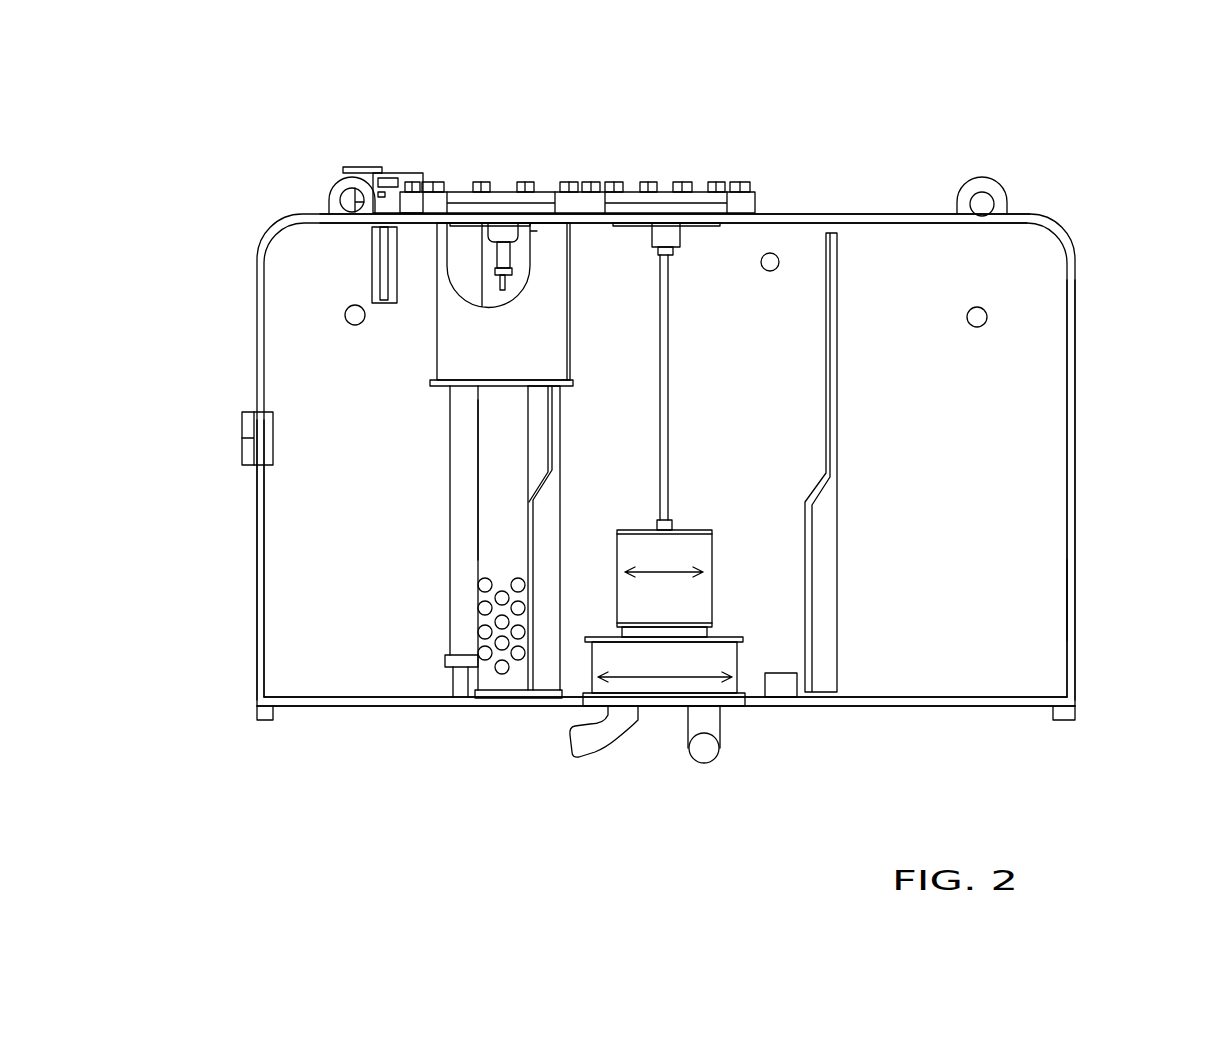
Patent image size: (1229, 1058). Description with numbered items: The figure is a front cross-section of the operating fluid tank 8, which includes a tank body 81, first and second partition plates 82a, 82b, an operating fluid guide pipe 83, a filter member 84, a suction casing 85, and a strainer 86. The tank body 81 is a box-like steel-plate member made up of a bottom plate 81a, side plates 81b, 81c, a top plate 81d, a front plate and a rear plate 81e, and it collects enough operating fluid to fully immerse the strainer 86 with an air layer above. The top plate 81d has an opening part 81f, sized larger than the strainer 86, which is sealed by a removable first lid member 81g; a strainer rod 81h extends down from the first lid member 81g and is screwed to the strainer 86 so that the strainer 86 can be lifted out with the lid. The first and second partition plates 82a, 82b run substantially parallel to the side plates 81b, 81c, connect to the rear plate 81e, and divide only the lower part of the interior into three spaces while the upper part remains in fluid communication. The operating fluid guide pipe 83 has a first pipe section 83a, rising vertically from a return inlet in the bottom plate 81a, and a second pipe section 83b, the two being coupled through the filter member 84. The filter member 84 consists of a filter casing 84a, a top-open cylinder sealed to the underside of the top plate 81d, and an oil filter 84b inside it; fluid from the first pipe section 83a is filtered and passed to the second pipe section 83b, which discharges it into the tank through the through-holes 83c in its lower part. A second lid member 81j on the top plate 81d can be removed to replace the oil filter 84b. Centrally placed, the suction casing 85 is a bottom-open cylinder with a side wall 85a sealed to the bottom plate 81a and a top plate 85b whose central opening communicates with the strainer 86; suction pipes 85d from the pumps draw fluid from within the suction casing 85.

The operating fluid tank 8 is at (1133, 247).
The tank body 81 is at (1088, 334).
The bottom plate 81a is at (903, 695).
The side plate 81b is at (258, 565).
The side plate 81c is at (1078, 497).
The top plate 81d is at (905, 212).
The rear plate 81e is at (1040, 600).
The opening part 81f is at (718, 228).
The first lid member 81g is at (700, 185).
The strainer rod 81h is at (658, 322).
The second lid member 81j is at (460, 185).
The first partition plate 82a is at (566, 530).
The second partition plate 82b is at (840, 532).
The operating fluid guide pipe 83 is at (459, 500).
The first pipe section 83a is at (458, 680).
The second pipe section 83b is at (485, 432).
The through-holes 83c is at (487, 610).
The filter member 84 is at (421, 313).
The filter casing 84a is at (433, 275).
The oil filter 84b is at (467, 248).
The suction casing 85 is at (578, 689).
The side wall 85a is at (742, 667).
The top plate 85b is at (728, 640).
The suction pipes 85d is at (602, 757).
The strainer 86 is at (695, 530).